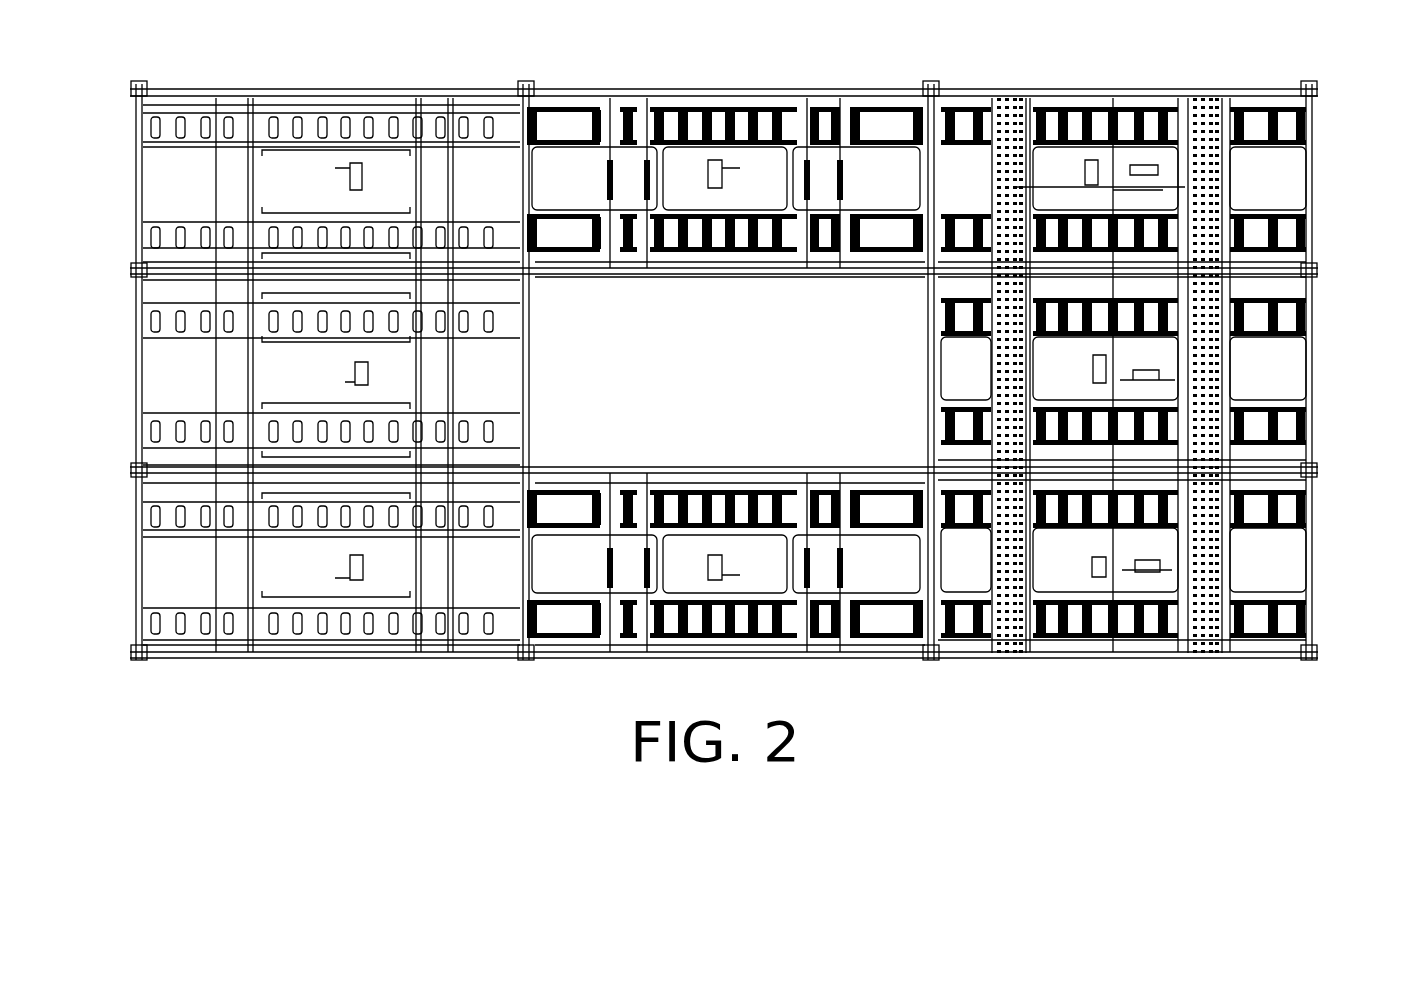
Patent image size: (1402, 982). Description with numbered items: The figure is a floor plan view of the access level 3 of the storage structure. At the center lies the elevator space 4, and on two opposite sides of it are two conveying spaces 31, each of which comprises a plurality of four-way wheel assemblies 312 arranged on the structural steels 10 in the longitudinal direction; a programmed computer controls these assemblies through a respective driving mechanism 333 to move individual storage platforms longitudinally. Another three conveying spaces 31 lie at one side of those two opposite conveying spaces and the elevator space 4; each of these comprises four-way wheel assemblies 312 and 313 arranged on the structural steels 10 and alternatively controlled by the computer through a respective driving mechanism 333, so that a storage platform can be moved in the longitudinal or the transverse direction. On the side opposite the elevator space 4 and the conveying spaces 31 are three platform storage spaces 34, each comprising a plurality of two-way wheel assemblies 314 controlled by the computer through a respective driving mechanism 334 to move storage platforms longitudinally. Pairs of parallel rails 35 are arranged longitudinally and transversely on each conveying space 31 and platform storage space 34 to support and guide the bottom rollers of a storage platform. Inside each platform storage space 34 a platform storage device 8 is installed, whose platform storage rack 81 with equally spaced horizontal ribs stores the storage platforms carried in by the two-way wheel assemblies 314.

The access level 3 is at (936, 72).
The elevator space 4 is at (590, 295).
The platform storage device 8 is at (335, 650).
The structural steels 10 is at (231, 92).
The conveying space 31 is at (872, 105).
The platform storage space 34 is at (150, 190).
The parallel rails 35 is at (680, 215).
The platform storage rack 81 is at (305, 645).
The four-way wheel assembly 312 is at (785, 107).
The four-way wheel assembly 313 is at (1005, 105).
The two-way wheel assembly 314 is at (425, 218).
The driving mechanism 333 is at (718, 160).
The driving mechanism 334 is at (357, 163).